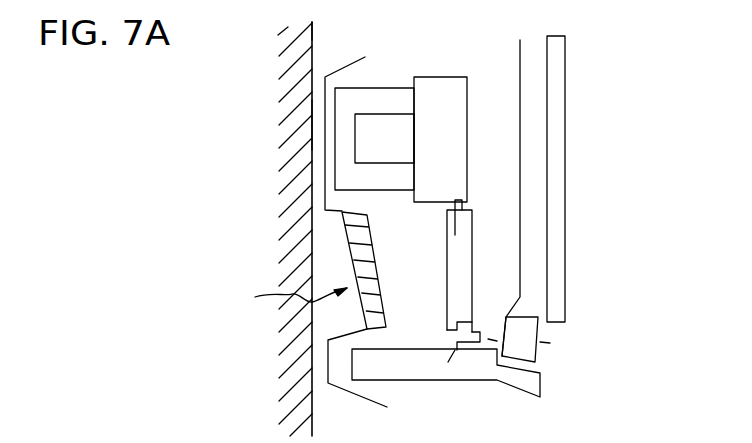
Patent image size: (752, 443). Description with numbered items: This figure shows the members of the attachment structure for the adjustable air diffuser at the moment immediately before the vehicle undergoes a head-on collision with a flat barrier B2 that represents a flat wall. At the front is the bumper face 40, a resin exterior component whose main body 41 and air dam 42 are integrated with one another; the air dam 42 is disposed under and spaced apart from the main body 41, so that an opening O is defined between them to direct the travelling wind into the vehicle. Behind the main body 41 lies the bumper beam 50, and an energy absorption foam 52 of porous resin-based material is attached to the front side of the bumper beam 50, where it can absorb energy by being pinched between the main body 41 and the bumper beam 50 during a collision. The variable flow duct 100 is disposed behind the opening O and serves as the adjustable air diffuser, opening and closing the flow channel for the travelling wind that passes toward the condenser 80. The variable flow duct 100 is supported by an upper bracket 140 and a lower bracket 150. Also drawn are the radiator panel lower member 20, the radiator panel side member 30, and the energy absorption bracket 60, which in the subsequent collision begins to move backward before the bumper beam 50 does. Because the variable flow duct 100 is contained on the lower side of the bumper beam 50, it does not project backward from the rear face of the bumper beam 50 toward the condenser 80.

The bumper face 40 is at (305, 57).
The main body 41 is at (314, 128).
The air dam 42 is at (328, 362).
The flat barrier B2 is at (313, 27).
The variable flow duct 100 is at (447, 272).
The upper bracket 140 is at (447, 222).
The opening O is at (292, 303).
The energy absorption foam 52 is at (397, 87).
The bumper beam 50 is at (443, 77).
The lower bracket 150 is at (483, 328).
The radiator panel side member 30 is at (522, 67).
The radiator panel lower member 20 is at (540, 350).
The energy absorption bracket 60 is at (540, 388).
The condenser 80 is at (567, 63).